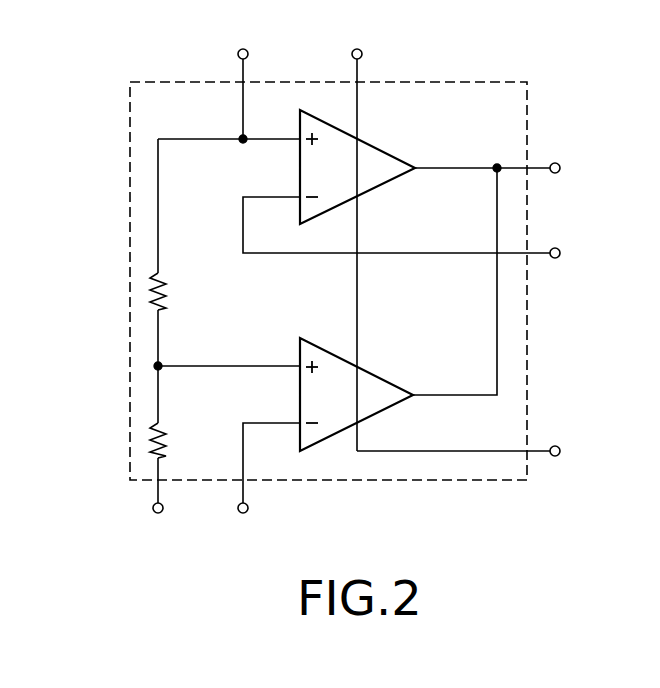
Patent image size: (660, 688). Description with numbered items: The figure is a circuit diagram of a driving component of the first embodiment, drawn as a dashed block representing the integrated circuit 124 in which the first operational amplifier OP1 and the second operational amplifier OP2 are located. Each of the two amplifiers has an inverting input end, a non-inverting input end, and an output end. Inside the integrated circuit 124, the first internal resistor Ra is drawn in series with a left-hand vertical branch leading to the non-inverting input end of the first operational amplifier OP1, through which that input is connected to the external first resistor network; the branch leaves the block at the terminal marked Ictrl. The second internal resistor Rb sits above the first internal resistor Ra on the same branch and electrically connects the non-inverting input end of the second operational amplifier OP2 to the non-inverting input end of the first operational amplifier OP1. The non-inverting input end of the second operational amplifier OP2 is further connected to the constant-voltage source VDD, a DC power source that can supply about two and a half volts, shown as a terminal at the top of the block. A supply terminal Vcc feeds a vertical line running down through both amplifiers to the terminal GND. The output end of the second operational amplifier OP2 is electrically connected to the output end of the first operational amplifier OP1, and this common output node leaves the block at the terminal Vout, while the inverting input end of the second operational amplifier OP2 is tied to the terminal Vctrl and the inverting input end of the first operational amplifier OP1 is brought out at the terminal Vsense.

The integrated circuit 124 is at (168, 82).
The first operational amplifier OP1 is at (375, 373).
The second operational amplifier OP2 is at (377, 147).
The first internal resistor Ra is at (177, 440).
The second internal resistor Rb is at (178, 291).
The constant-voltage source VDD is at (251, 79).
The Vcc supply terminal Vcc is at (359, 235).
The output voltage terminal Vout is at (519, 167).
The control voltage terminal Vctrl is at (434, 231).
The ground terminal GND is at (491, 452).
The control current terminal Ictrl is at (156, 523).
The sense voltage terminal Vsense is at (254, 483).